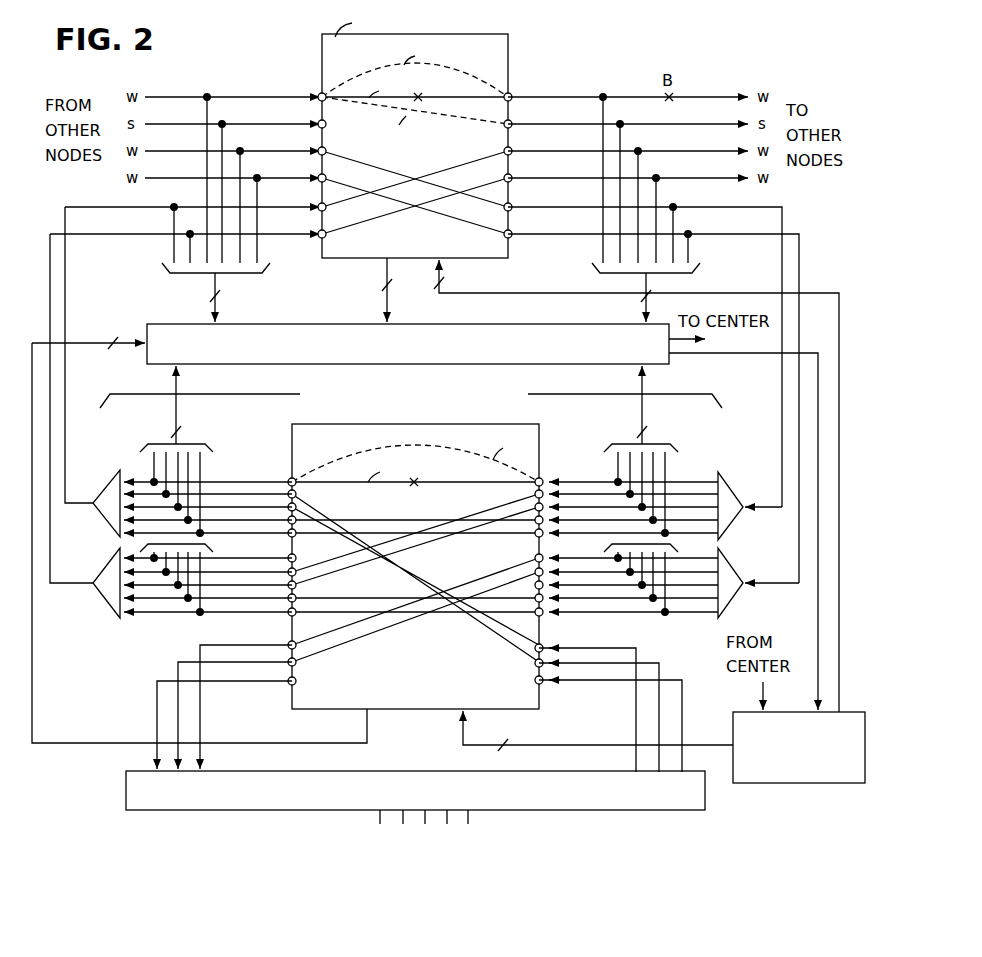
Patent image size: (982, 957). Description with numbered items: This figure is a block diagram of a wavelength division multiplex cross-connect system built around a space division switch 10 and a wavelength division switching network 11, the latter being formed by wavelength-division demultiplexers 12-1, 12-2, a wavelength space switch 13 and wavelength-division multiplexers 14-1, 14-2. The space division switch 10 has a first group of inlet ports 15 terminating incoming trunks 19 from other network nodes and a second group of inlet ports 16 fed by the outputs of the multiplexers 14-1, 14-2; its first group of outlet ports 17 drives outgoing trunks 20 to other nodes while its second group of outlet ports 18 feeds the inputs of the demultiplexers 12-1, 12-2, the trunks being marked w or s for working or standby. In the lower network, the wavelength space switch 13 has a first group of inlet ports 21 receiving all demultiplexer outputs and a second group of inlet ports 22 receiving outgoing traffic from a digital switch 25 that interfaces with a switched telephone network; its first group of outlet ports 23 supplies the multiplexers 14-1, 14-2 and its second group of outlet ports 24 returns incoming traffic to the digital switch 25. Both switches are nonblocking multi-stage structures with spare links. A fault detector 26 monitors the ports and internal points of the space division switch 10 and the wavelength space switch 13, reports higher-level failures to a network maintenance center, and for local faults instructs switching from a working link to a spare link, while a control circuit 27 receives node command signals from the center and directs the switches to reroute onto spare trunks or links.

The space division switch 10 is at (424, 250).
The wavelength division switching network 11 is at (411, 396).
The wavelength-division demultiplexer 12-1 is at (731, 489).
The wavelength-division demultiplexer 12-2 is at (731, 572).
The wavelength space switch 13 is at (405, 710).
The wavelength-division multiplexer 14-1 is at (112, 474).
The wavelength-division multiplexer 14-2 is at (105, 568).
The first group of inlet ports 15 is at (318, 177).
The second group of inlet ports 16 is at (318, 236).
The first group of outlet ports 17 is at (512, 177).
The second group of outlet ports 18 is at (512, 236).
The incoming trunks 19 is at (163, 178).
The outgoing trunks 20 is at (701, 178).
The first group of inlet ports 21 is at (543, 612).
The second group of inlet ports 22 is at (543, 681).
The first group of outlet ports 23 is at (288, 612).
The second group of outlet ports 24 is at (288, 682).
The digital switch 25 is at (196, 813).
The fault detector 26 is at (288, 325).
The control circuit 27 is at (798, 786).